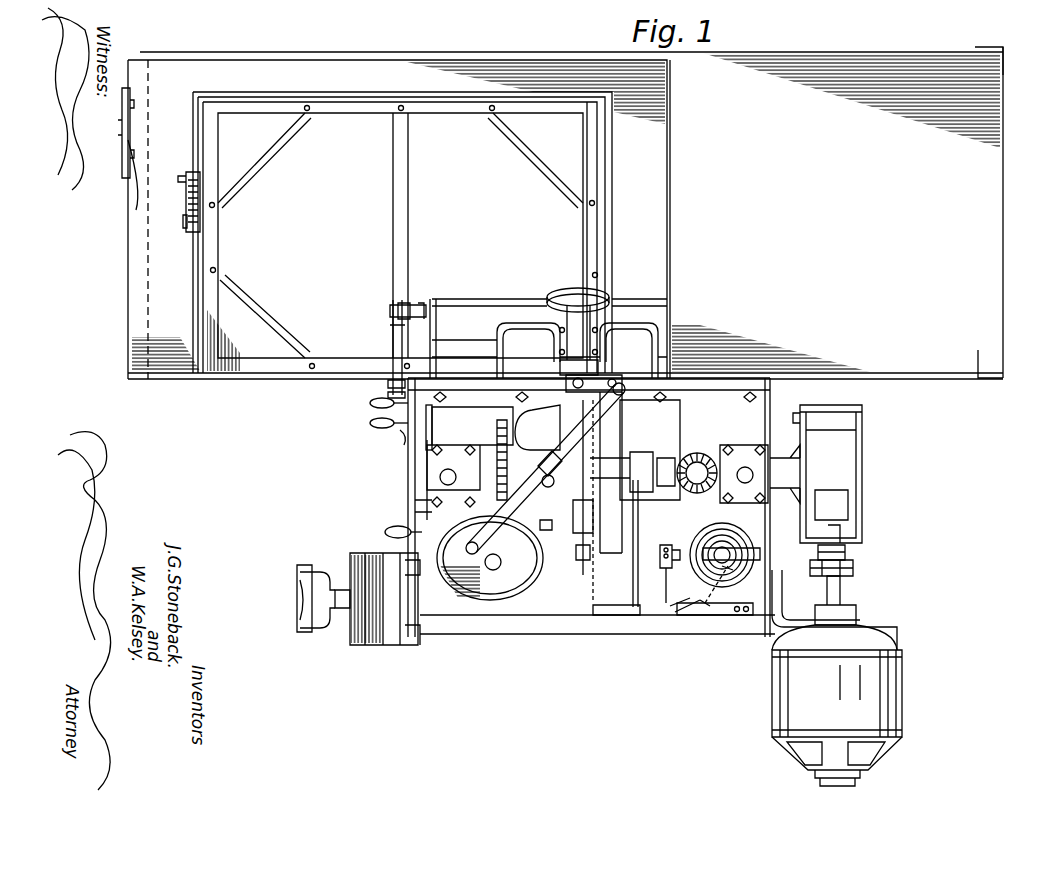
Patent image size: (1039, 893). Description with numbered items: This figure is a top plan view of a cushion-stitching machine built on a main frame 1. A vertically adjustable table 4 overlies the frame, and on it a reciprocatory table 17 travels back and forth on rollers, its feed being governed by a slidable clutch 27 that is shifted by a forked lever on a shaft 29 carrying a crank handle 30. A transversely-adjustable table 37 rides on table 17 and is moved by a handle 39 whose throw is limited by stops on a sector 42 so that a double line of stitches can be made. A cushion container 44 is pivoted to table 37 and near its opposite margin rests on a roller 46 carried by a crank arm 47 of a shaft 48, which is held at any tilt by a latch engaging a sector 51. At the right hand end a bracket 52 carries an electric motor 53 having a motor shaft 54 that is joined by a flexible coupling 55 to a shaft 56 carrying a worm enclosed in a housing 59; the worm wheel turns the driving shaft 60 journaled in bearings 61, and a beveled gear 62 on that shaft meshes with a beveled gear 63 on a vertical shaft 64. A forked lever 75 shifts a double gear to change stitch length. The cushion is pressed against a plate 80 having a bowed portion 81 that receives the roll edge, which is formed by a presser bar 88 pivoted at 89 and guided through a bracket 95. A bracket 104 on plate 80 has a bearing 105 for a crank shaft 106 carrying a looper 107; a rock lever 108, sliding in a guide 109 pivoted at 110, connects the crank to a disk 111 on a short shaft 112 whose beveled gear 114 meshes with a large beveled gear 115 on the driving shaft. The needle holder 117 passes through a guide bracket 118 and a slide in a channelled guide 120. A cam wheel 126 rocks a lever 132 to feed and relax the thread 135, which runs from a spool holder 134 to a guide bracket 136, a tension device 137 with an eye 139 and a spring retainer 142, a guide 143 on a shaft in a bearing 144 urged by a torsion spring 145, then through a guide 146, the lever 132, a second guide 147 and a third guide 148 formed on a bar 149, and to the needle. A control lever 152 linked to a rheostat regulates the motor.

The main frame 1 is at (427, 643).
The table 4 is at (565, 213).
The reciprocatory table 17 is at (668, 154).
The slidable clutch 27 is at (425, 303).
The shaft 29 is at (388, 310).
The crank handle 30 is at (395, 340).
The transversely-adjustable table 37 is at (610, 185).
The handle 39 is at (125, 180).
The sector 42 is at (136, 165).
The cushion container 44 is at (593, 151).
The roller 46 is at (213, 180).
The crank arm 47 is at (188, 185).
The shaft 48 is at (185, 222).
The sector 51 is at (163, 287).
The bracket 52 is at (773, 638).
The electric motor 53 is at (902, 680).
The neck 54 is at (842, 595).
The flexible coupling 55 is at (856, 569).
The shaft 56 is at (848, 553).
The housing 59 is at (862, 412).
The driving shaft 60 is at (703, 458).
The bearings 61 is at (433, 462).
The beveled gear 62 is at (688, 447).
The beveled gear 63 is at (700, 462).
The vertical shaft 64 is at (776, 412).
The forked lever 75 is at (387, 532).
The plate 80 is at (603, 373).
The bowed portion 81 is at (640, 393).
The presser bar 88 is at (365, 420).
The pivot 89 is at (390, 395).
The bracket 95 is at (470, 298).
The bracket 104 is at (627, 305).
The bearing 105 is at (560, 318).
The crank shaft 106 is at (555, 345).
The looper 107 is at (575, 300).
The rock lever 108 is at (477, 528).
The guide 109 is at (548, 522).
The pivot 110 is at (545, 468).
The disk 111 is at (480, 600).
The short shaft 112 is at (493, 568).
The beveled gear 114 is at (430, 512).
The large beveled gear 115 is at (490, 428).
The needle holder 117 is at (582, 565).
The guide bracket 118 is at (576, 560).
The channelled guide 120 is at (560, 545).
The cam wheel 126 is at (655, 400).
The lever 132 is at (664, 452).
The spool holder 134 is at (760, 548).
The thread 135 is at (740, 528).
The guide bracket 136 is at (762, 556).
The tension device 137 is at (708, 610).
The eye 139 is at (698, 617).
The spring retainer 142 is at (716, 606).
The guide 143 is at (650, 607).
The bearing 144 is at (662, 545).
The torsion spring 145 is at (674, 552).
The guide 146 is at (641, 612).
The second guide 147 is at (633, 605).
The third guide 148 is at (625, 600).
The bar 149 is at (615, 618).
The control lever 152 is at (402, 438).